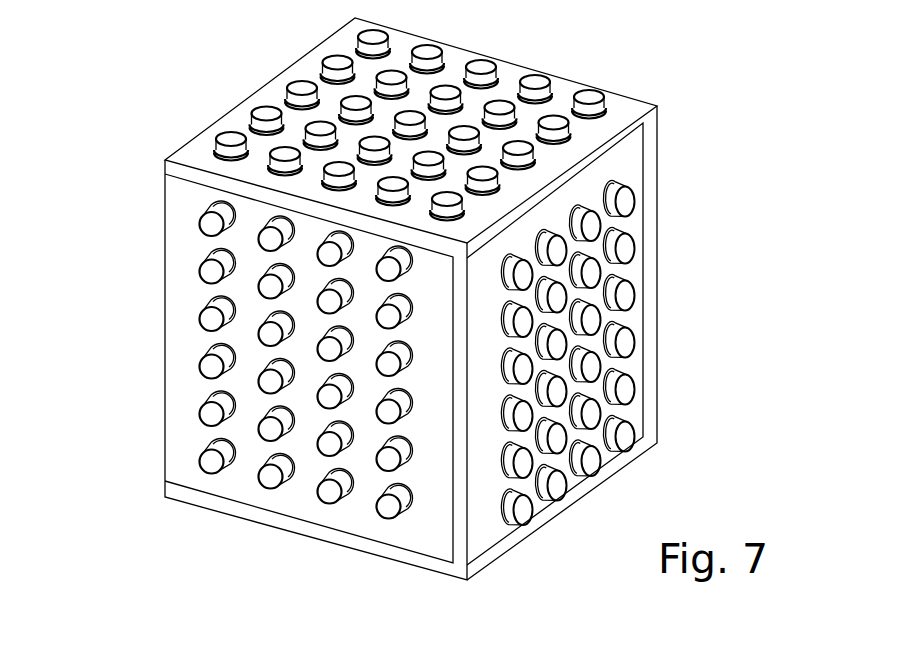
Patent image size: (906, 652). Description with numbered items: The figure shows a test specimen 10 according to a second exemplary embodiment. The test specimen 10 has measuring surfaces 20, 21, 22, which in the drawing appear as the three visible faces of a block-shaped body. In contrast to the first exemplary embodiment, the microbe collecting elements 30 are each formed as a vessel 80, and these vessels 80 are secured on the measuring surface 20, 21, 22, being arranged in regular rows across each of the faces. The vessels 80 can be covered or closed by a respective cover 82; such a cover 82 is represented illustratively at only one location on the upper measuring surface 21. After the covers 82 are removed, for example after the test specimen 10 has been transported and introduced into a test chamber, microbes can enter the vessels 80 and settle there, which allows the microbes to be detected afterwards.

The test specimen 10 is at (131, 355).
The measuring surface 20 is at (637, 411).
The measuring surface 21 is at (557, 88).
The measuring surface 22 is at (225, 485).
The microbe collecting element 30 is at (496, 315).
The vessel 80 is at (522, 157).
The cover 82 is at (221, 131).